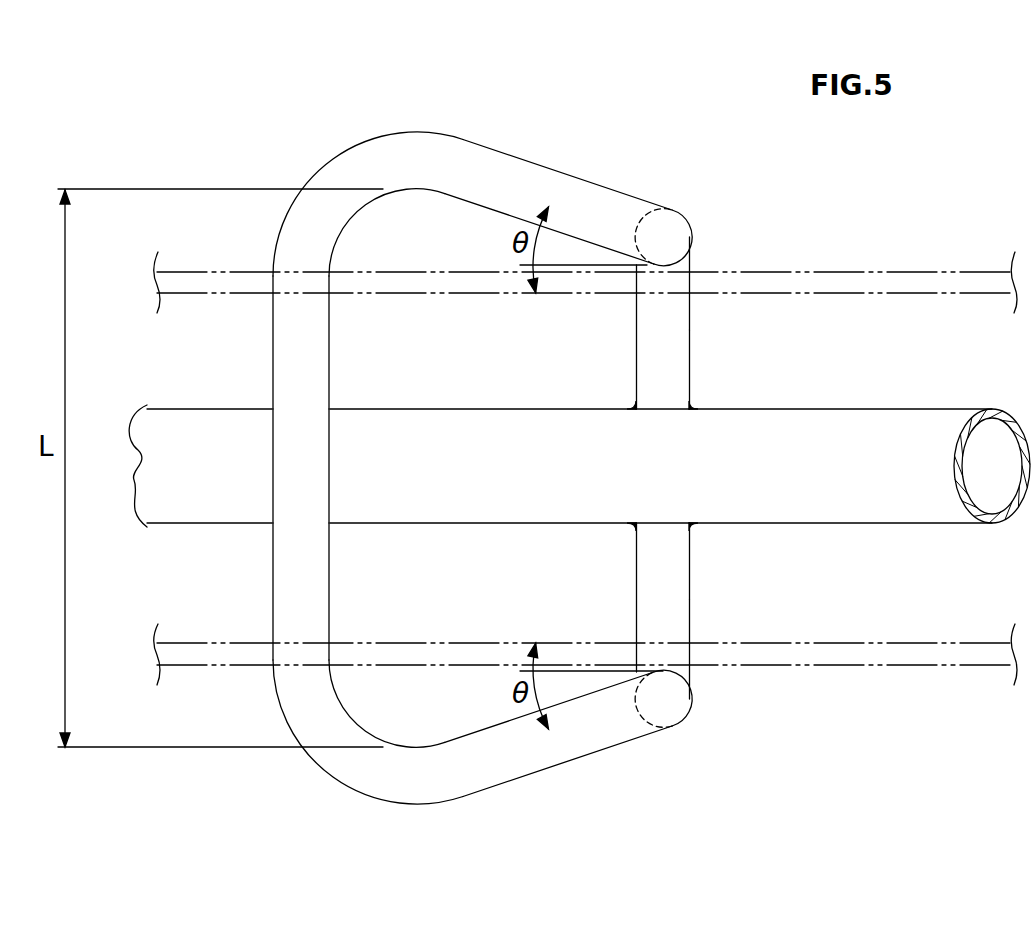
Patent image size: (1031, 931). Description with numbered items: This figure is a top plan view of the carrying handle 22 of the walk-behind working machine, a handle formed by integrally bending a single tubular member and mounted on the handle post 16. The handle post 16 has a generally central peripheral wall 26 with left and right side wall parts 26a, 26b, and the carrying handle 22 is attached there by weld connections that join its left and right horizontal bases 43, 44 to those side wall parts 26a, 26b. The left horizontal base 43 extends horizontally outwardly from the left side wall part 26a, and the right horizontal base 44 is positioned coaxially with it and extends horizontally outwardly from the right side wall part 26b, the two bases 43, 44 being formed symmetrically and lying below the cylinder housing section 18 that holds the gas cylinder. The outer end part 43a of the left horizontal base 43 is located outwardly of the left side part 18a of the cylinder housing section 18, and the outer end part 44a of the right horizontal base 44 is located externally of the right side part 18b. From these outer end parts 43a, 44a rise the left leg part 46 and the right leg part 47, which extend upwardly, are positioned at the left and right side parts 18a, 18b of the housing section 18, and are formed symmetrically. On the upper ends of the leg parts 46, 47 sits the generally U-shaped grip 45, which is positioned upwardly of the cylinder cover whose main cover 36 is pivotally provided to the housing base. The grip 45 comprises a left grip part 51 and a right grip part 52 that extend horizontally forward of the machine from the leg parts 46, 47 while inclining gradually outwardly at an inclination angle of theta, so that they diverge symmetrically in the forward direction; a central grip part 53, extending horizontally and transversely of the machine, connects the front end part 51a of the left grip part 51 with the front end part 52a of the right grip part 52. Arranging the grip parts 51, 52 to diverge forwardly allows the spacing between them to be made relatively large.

The handle post 16 is at (866, 406).
The cylinder housing section 18 is at (471, 262).
The left side part 18a is at (930, 667).
The right side part 18b is at (973, 271).
The carrying handle 22 is at (266, 158).
The central peripheral wall 26 is at (632, 475).
The left side wall part 26a is at (658, 515).
The right side wall part 26b is at (660, 418).
The main cover 36 is at (473, 645).
The left horizontal base 43 is at (675, 610).
The outer end part 43a is at (683, 672).
The right horizontal base 44 is at (690, 330).
The outer end part 44a is at (692, 258).
The grip 45 is at (265, 377).
The left leg part 46 is at (645, 723).
The right leg part 47 is at (643, 212).
The left grip part 51 is at (525, 770).
The front end part 51a is at (362, 780).
The right grip part 52 is at (528, 160).
The front end part 52a is at (340, 163).
The central grip part 53 is at (285, 463).